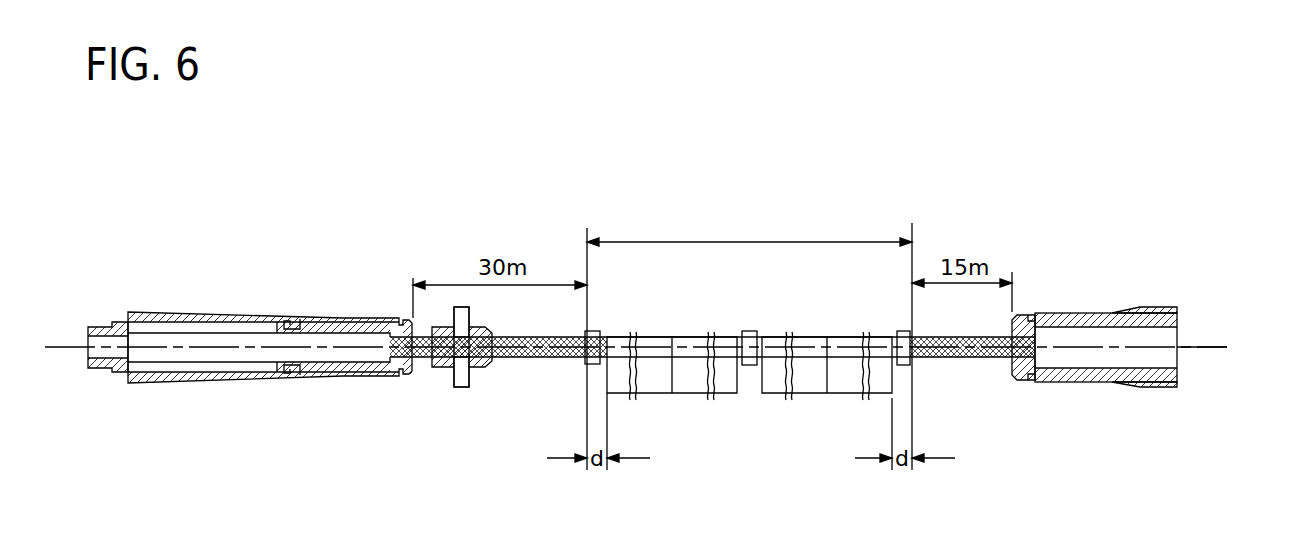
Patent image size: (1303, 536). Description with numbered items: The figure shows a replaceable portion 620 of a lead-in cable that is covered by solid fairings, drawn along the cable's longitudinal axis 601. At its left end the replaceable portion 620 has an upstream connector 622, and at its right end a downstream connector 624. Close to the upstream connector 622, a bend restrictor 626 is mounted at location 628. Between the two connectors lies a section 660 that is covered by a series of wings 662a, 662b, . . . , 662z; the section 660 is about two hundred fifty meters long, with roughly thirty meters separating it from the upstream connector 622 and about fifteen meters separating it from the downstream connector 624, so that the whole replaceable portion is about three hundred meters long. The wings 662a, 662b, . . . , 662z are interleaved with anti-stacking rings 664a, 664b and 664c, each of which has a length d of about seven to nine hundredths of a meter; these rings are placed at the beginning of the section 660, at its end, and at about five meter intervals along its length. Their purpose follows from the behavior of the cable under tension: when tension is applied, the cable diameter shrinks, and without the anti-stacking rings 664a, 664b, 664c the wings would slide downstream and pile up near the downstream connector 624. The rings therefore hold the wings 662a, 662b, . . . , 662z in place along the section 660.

The longitudinal axis 601 is at (1205, 347).
The replaceable portion 620 is at (644, 158).
The upstream connector 622 is at (172, 311).
The downstream connector 624 is at (1165, 373).
The bend restrictor 626 is at (483, 368).
The location 628 is at (462, 378).
The section 660 is at (749, 339).
The wing 662a is at (650, 347).
The wing 662b is at (727, 382).
The wing 662z is at (850, 345).
The anti-stacking ring 664a is at (593, 360).
The anti-stacking ring 664b is at (750, 365).
The anti-stacking ring 664c is at (907, 360).